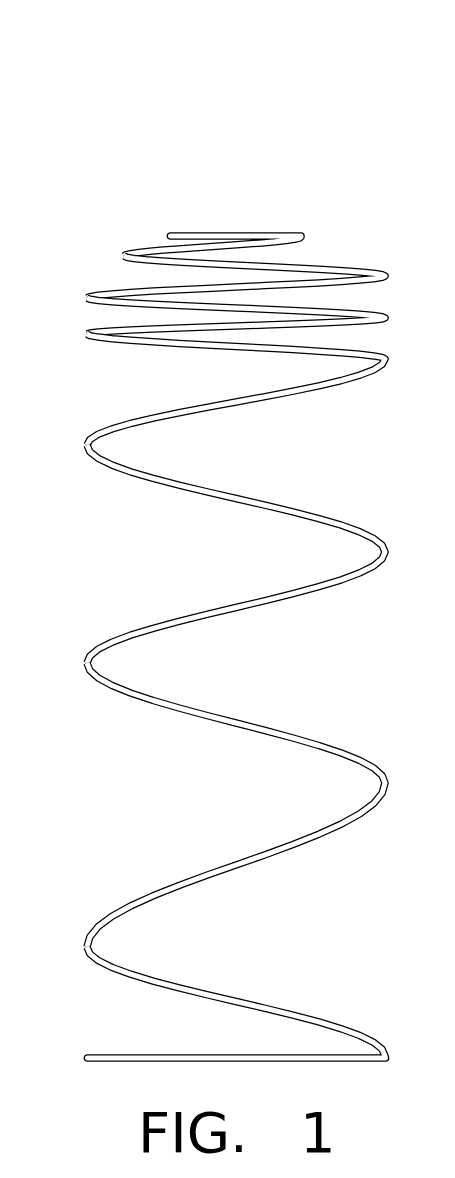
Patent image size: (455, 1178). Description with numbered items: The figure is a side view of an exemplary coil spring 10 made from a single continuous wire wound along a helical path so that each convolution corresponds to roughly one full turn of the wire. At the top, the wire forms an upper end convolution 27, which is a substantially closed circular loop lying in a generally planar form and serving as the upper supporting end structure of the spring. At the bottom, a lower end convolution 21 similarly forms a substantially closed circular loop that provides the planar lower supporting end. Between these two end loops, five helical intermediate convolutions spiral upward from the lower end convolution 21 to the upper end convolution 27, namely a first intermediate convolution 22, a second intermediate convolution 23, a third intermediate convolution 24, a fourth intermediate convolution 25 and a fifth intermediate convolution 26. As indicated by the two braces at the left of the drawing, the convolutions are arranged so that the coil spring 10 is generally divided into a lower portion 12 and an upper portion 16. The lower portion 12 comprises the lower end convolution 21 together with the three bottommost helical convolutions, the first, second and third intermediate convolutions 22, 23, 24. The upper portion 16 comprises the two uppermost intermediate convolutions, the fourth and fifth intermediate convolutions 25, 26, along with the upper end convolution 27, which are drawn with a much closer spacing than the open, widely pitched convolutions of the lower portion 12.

The coil spring 10 is at (129, 104).
The lower portion 12 is at (66, 340).
The upper portion 16 is at (66, 232).
The lower end convolution 21 is at (378, 1055).
The first intermediate convolution 22 is at (385, 780).
The second intermediate convolution 23 is at (388, 548).
The third intermediate convolution 24 is at (389, 359).
The fourth intermediate convolution 25 is at (384, 316).
The fifth intermediate convolution 26 is at (385, 270).
The upper end convolution 27 is at (298, 232).